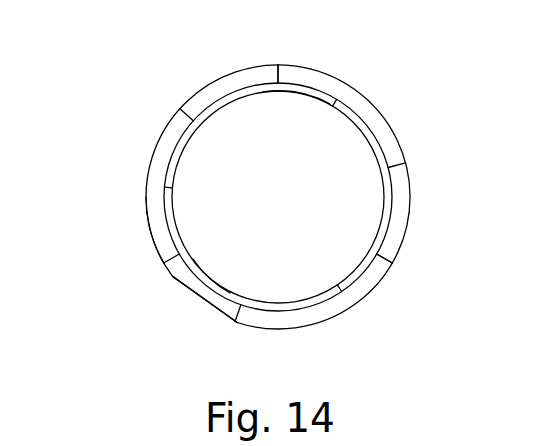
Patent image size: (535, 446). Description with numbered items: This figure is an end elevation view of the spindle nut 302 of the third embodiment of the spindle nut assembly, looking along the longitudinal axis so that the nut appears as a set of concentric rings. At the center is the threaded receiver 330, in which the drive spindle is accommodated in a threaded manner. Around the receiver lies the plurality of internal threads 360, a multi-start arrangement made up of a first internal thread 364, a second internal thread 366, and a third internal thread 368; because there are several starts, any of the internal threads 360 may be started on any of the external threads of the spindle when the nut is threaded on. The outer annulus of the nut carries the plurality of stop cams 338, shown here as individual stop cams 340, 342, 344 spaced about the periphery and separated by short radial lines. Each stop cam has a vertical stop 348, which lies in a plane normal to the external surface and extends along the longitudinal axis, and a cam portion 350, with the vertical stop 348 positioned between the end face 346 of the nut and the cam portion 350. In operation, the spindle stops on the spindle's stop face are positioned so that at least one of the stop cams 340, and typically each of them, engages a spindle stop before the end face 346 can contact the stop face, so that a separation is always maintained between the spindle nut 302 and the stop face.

The spindle nut 302 is at (383, 76).
The threaded receiver 330 is at (302, 213).
The stop cams 338 is at (201, 63).
The stop cam 340 is at (148, 273).
The stop cam 342 is at (402, 272).
The stop cam 344 is at (280, 48).
The end face 346 is at (212, 306).
The vertical stop 348 is at (174, 280).
The cam portion 350 is at (153, 227).
The internal threads 360 is at (318, 118).
The first internal thread 364 is at (193, 259).
The second internal thread 366 is at (380, 250).
The third internal thread 368 is at (263, 92).